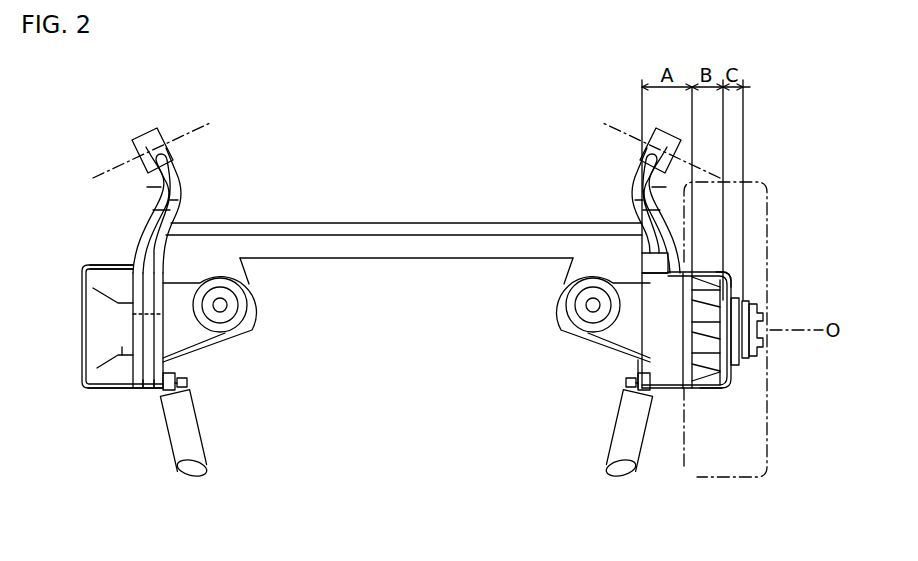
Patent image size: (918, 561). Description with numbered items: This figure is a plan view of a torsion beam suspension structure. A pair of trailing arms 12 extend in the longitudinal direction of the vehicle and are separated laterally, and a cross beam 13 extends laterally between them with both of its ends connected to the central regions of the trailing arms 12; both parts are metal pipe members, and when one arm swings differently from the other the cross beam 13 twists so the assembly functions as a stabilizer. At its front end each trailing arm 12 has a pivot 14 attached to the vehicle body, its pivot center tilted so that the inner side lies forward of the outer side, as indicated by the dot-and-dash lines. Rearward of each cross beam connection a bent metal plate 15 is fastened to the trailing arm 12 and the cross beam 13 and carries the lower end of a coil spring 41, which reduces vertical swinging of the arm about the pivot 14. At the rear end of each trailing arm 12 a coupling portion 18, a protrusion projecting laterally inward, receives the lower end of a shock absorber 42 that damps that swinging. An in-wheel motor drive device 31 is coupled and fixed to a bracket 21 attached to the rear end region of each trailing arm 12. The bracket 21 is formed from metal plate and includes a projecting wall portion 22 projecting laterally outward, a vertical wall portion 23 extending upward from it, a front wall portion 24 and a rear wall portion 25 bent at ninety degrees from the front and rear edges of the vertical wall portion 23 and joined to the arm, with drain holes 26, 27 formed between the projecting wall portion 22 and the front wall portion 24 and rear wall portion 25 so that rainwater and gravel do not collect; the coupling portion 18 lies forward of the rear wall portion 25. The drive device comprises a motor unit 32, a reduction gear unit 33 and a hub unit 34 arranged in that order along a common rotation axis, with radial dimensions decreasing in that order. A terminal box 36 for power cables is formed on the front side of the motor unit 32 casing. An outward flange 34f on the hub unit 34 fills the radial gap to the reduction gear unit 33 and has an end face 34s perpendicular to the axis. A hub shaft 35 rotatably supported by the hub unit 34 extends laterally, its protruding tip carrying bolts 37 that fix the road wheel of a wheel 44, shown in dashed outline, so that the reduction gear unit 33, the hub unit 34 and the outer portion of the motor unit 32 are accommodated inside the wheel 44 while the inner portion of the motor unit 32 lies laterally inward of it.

The trailing arm 12 is at (172, 203).
The cross beam 13 is at (392, 225).
The pivot 14 is at (150, 143).
The plate 15 is at (207, 345).
The coupling portion 18 is at (187, 383).
The bracket 21 is at (102, 401).
The projecting wall portion 22 is at (122, 347).
The vertical wall portion 23 is at (82, 331).
The front wall portion 24 is at (115, 265).
The rear wall portion 25 is at (145, 390).
The drain hole 26 is at (95, 282).
The drain hole 27 is at (95, 378).
The in-wheel motor drive device 31 is at (638, 365).
The motor unit 32 is at (667, 380).
The reduction gear unit 33 is at (705, 365).
The hub unit 34 is at (730, 358).
The outward flange 34f is at (725, 273).
The end face 34s is at (730, 297).
The hub shaft 35 is at (763, 322).
The terminal box 36 is at (648, 262).
The bolts 37 is at (760, 305).
The coil spring 41 is at (248, 308).
The shock absorber 42 is at (182, 415).
The wheel 44 is at (757, 480).